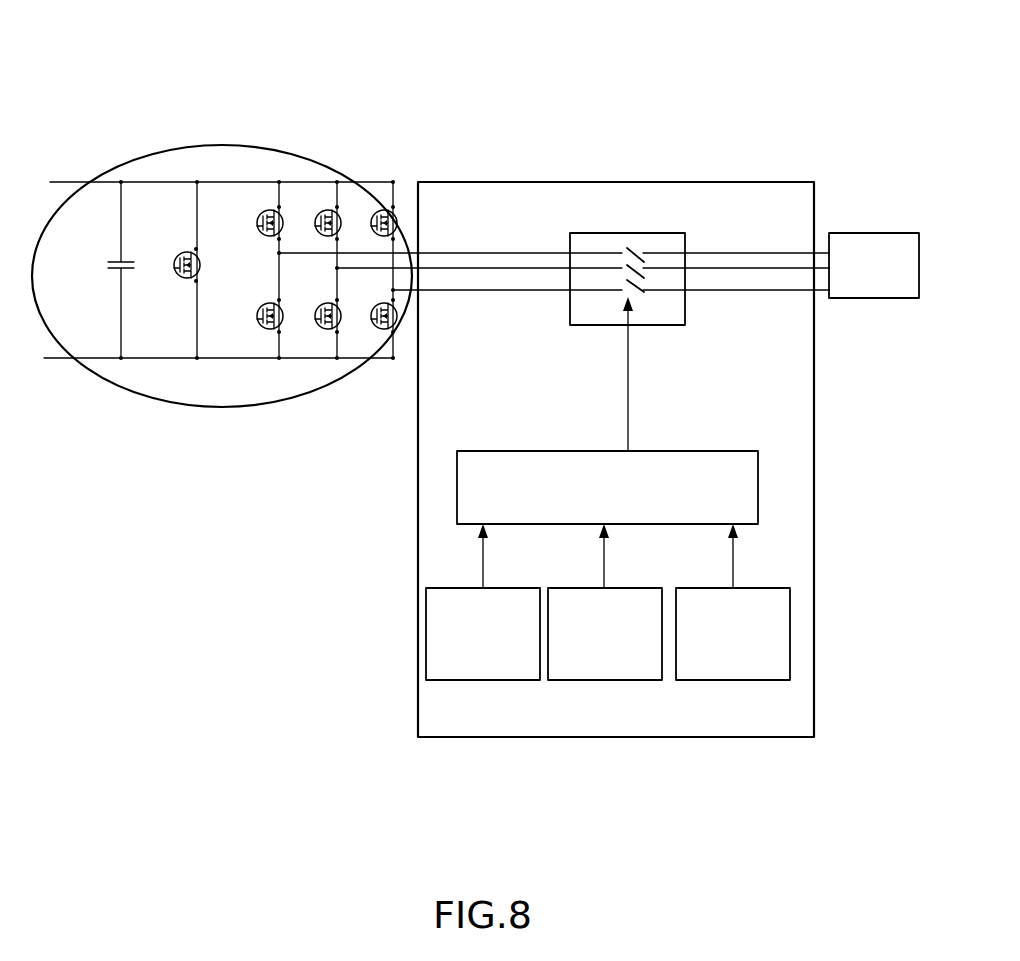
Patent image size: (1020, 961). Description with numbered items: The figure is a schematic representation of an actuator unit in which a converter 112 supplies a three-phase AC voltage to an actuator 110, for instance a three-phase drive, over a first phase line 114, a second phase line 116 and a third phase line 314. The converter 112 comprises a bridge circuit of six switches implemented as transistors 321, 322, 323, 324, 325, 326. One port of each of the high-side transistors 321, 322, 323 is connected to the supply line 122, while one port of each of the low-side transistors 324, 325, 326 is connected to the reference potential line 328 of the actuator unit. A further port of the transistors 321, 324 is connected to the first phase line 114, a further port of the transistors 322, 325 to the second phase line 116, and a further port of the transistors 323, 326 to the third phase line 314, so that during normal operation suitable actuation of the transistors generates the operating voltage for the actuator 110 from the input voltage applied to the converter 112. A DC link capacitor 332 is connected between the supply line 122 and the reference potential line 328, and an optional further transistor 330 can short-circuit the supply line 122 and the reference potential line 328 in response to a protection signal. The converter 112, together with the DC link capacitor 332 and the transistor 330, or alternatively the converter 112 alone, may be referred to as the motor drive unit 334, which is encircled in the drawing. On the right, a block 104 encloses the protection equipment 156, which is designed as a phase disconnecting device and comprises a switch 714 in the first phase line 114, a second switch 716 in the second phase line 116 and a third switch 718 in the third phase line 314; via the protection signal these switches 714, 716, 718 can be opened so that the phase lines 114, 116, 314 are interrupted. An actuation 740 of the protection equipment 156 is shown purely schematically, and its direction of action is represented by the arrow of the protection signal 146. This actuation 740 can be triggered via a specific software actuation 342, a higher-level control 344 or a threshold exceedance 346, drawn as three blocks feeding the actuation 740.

The controller 104 is at (814, 613).
The actuator 110 is at (870, 233).
The converter 112 is at (417, 157).
The first phase line 114 is at (703, 253).
The second phase line 116 is at (745, 268).
The third phase line 314 is at (798, 290).
The supply line 122 is at (60, 182).
The reference potential line 328 is at (93, 358).
The further transistor 330 is at (178, 252).
The DC link capacitor 332 is at (113, 260).
The motor drive unit 334 is at (148, 397).
The transistor 321 is at (260, 212).
The transistor 322 is at (318, 210).
The transistor 323 is at (370, 210).
The transistor 324 is at (258, 328).
The transistor 325 is at (316, 328).
The transistor 326 is at (372, 328).
The switch 714 is at (628, 248).
The second switch 716 is at (645, 258).
The third switch 718 is at (648, 280).
The protection equipment 156 is at (685, 315).
The protection signal 146 is at (628, 397).
The actuation 740 is at (758, 475).
The software actuation 342 is at (480, 680).
The higher-level control 344 is at (607, 680).
The threshold exceedance 346 is at (738, 680).